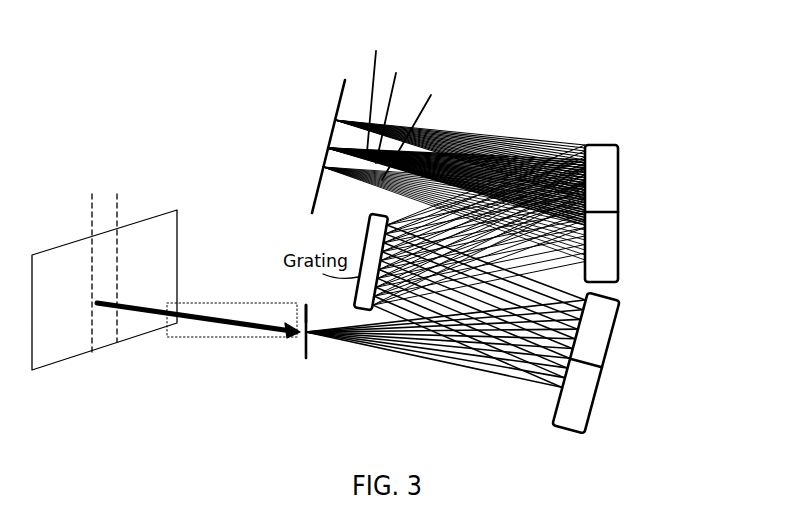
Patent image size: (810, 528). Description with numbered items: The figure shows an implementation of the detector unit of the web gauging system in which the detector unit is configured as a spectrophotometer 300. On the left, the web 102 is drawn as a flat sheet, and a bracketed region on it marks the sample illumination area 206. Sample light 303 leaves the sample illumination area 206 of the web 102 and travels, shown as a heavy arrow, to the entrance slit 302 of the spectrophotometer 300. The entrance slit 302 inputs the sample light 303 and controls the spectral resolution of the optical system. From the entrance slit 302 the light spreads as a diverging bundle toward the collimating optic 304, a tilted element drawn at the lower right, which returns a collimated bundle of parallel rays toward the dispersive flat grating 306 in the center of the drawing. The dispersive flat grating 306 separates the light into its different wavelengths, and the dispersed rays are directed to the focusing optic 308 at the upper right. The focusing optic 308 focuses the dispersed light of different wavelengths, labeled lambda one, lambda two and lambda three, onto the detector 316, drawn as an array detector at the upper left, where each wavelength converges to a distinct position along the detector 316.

The spectrophotometer 300 is at (143, 132).
The web 102 is at (134, 222).
The sample illumination area 206 is at (104, 186).
The sample light 303 is at (202, 318).
The entrance slit 302 is at (303, 340).
The dispersive flat grating 306 is at (310, 301).
The collimating optic 304 is at (553, 414).
The focusing optic 308 is at (611, 144).
The detector 316 is at (322, 161).